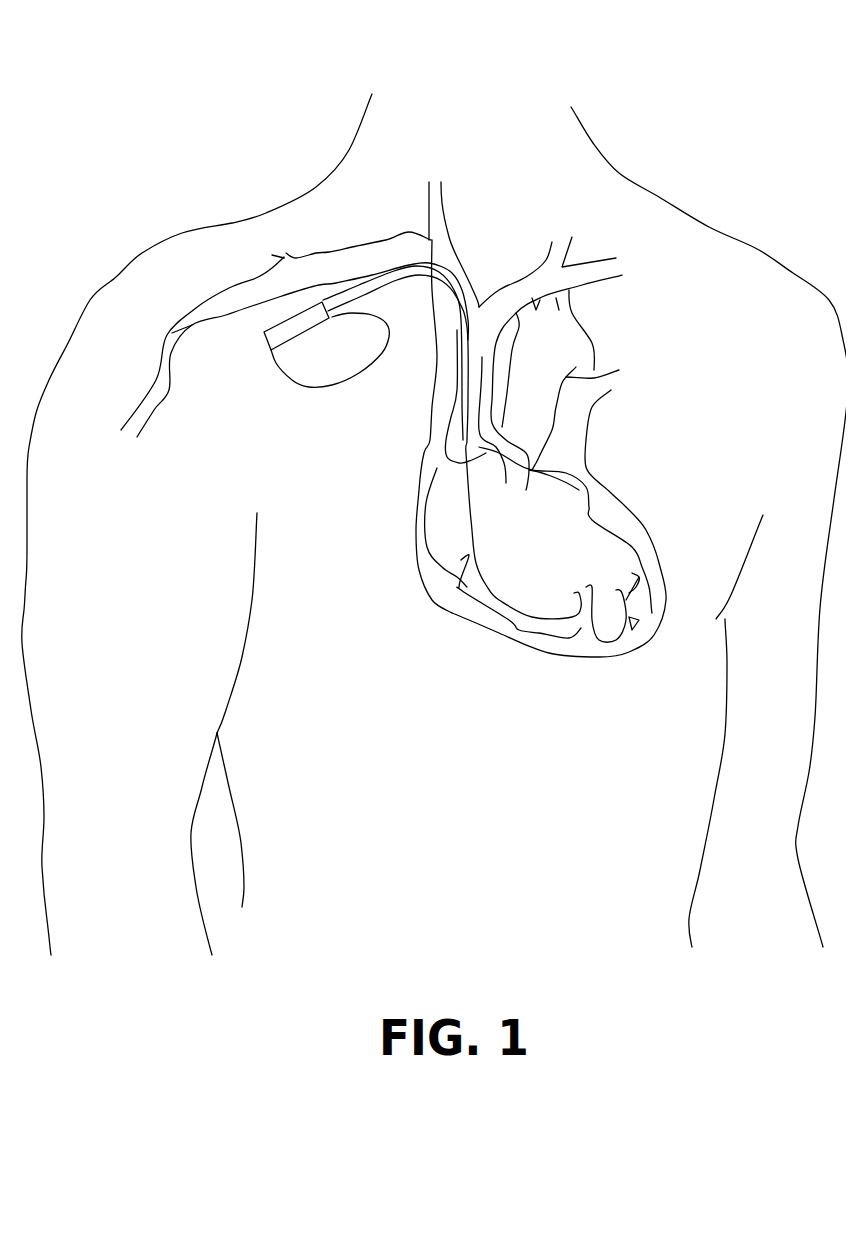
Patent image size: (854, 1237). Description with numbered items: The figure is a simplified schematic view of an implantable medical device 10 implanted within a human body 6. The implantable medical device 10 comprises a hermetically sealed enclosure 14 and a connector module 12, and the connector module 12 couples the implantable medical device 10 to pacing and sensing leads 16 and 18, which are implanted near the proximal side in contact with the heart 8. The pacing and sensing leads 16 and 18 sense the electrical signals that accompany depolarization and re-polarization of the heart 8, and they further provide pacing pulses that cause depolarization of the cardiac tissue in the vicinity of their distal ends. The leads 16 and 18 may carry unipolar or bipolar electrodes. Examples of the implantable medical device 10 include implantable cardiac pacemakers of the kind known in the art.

The human body 6 is at (687, 95).
The heart 8 is at (573, 660).
The implantable medical device 10 is at (387, 474).
The connector module 12 is at (268, 332).
The hermetically sealed enclosure 14 is at (333, 362).
The pacing and sensing lead 16 is at (452, 474).
The pacing and sensing lead 18 is at (472, 557).